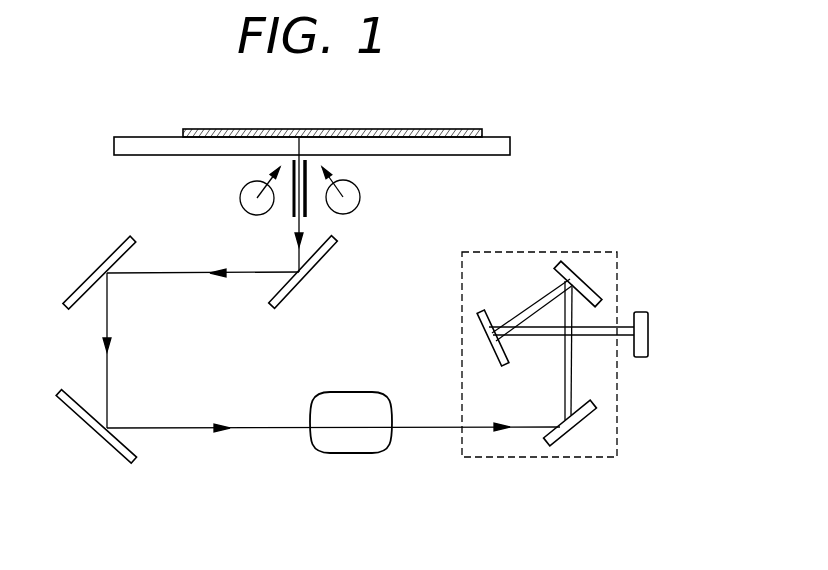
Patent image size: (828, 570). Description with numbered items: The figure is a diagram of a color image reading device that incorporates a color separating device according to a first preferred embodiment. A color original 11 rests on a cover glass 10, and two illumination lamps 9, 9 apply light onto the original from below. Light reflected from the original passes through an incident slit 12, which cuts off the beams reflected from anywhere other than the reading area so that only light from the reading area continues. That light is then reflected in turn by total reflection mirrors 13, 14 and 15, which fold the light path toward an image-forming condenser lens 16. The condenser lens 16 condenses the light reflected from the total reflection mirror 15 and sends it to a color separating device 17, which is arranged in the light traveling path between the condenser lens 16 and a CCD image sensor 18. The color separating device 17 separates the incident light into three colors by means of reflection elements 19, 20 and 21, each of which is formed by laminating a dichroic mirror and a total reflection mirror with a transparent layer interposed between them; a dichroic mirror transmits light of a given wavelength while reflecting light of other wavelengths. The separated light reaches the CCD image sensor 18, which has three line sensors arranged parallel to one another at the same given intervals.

The illumination lamp 9 is at (239, 200).
The cover glass 10 is at (114, 147).
The color original 11 is at (417, 129).
The incident slit 12 is at (307, 205).
The total reflection mirror 13 is at (310, 276).
The total reflection mirror 14 is at (98, 262).
The total reflection mirror 15 is at (85, 425).
The condenser lens 16 is at (335, 455).
The color separating device 17 is at (488, 458).
The CCD image sensor 18 is at (648, 350).
The reflection element 19 is at (573, 440).
The reflection element 20 is at (575, 275).
The reflection element 21 is at (480, 332).